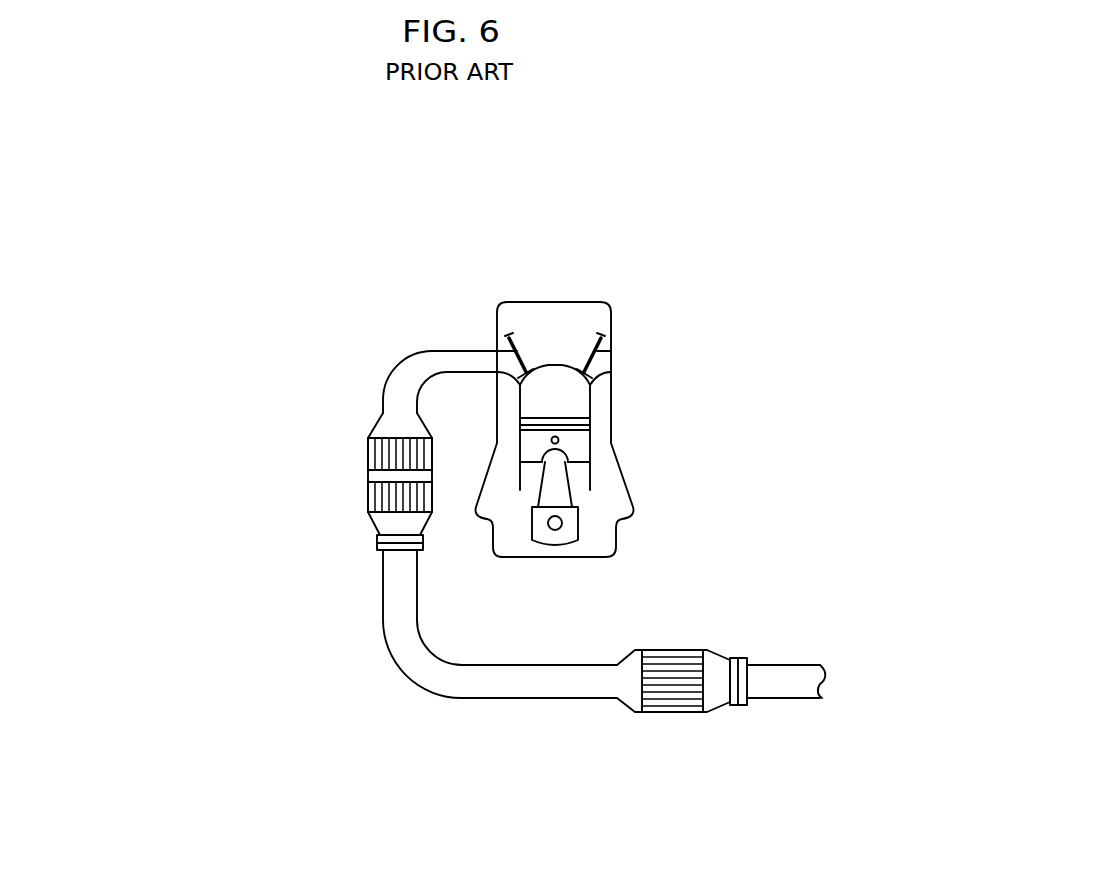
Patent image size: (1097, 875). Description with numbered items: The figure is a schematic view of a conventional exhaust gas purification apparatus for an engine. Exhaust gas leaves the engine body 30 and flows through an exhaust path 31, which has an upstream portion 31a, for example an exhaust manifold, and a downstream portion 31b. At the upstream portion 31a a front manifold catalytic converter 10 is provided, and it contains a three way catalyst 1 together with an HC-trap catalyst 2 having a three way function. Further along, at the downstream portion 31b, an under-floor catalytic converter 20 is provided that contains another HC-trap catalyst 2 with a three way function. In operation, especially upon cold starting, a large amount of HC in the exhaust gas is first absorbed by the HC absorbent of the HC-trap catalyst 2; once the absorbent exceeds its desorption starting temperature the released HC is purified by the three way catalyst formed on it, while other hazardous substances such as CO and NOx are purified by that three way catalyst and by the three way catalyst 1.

The engine body 30 is at (599, 285).
The exhaust path 31 is at (465, 513).
The upstream portion of exhaust path 31a is at (440, 362).
The downstream portion of exhaust path 31b is at (590, 677).
The manifold catalytic converter 10 is at (268, 478).
The three way catalyst 1 is at (370, 450).
The HC-trap catalyst with three way function 2 is at (667, 750).
The under-floor catalytic converter 20 is at (690, 642).